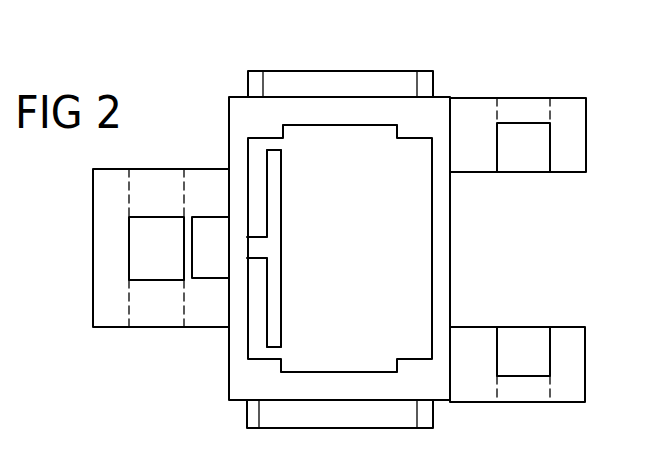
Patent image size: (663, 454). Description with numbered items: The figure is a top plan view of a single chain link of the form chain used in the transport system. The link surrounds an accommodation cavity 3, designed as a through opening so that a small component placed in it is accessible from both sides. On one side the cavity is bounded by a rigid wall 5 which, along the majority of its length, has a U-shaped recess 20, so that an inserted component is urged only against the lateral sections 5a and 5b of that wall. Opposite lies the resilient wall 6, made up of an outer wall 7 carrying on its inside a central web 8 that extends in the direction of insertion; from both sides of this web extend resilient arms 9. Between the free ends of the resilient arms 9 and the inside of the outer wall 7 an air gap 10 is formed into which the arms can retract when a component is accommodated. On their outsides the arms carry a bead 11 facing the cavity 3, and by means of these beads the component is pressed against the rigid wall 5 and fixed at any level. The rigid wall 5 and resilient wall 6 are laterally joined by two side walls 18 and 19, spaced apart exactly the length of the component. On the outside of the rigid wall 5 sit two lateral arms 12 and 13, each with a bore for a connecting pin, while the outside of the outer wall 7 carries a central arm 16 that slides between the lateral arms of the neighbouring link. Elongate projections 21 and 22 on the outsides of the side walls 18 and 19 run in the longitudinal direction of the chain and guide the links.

The accommodation cavity 3 is at (366, 280).
The rigid wall 5 is at (445, 250).
The lateral section of rigid wall 5a is at (399, 135).
The lateral section of rigid wall 5b is at (392, 358).
The resilient wall 6 is at (277, 248).
The outer wall 7 is at (238, 343).
The central web 8 is at (265, 247).
The resilient arms 9 is at (275, 203).
The air gap 10 is at (258, 164).
The bead 11 is at (283, 158).
The lateral arm 12 is at (570, 135).
The lateral arm 13 is at (568, 365).
The central arm 16 is at (105, 258).
The side wall 18 is at (352, 387).
The side wall 19 is at (335, 108).
The U-shaped recess 20 is at (412, 238).
The elongate projection 21 is at (353, 83).
The elongate projection 22 is at (273, 412).